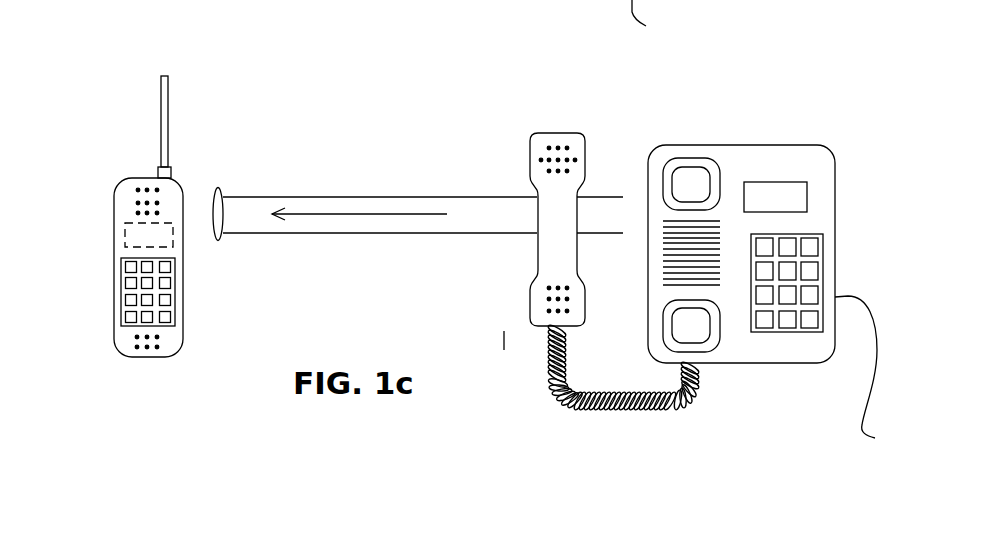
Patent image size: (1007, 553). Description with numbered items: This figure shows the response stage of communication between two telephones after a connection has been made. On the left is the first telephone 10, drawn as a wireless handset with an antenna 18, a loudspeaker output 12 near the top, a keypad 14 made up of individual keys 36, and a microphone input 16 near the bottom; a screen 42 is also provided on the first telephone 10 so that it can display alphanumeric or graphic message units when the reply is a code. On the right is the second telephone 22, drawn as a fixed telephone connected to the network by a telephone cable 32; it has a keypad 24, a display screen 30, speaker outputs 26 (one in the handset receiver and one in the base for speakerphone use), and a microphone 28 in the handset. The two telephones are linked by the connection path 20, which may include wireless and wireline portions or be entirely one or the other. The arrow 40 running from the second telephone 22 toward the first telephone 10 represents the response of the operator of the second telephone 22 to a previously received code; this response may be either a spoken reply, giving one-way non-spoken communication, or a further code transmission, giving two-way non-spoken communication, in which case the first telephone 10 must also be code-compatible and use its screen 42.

The first telephone 10 is at (118, 122).
The loudspeaker output 12 is at (140, 204).
The keypad 14 is at (138, 310).
The microphone input 16 is at (147, 347).
The antenna 18 is at (168, 93).
The connection path 20 is at (218, 188).
The second telephone 22 is at (812, 106).
The keypad 24 is at (797, 323).
The speaker outputs 26 is at (560, 153).
The microphone 28 is at (552, 298).
The display screen 30 is at (789, 198).
The telephone cable 32 is at (859, 298).
The keys 36 is at (163, 298).
The arrow 40 is at (348, 213).
The screen 42 is at (140, 233).